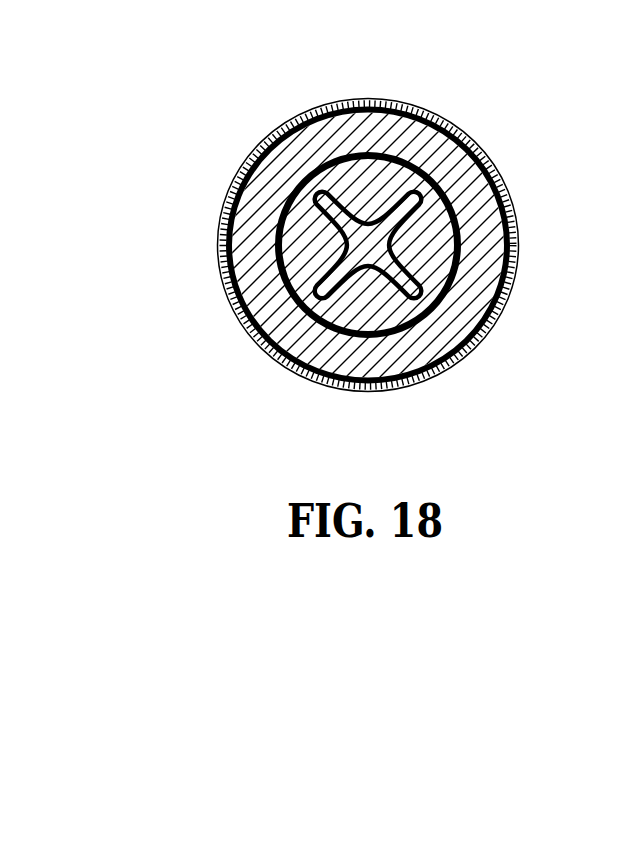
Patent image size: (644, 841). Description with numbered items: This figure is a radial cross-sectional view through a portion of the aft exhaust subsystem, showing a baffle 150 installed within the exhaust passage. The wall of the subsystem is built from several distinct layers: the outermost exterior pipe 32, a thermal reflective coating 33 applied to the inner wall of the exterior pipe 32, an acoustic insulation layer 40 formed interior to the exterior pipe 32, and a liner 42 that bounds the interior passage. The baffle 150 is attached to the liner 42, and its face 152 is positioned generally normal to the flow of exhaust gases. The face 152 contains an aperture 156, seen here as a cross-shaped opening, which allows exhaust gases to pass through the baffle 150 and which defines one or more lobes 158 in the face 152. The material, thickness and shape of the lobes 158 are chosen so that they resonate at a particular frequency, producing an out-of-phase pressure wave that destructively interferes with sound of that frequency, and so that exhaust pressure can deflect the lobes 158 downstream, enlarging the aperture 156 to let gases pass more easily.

The exterior pipe 32 is at (395, 392).
The thermal reflective coating 33 is at (430, 376).
The acoustic insulation layer 40 is at (440, 318).
The liner 42 is at (460, 268).
The baffle 150 is at (301, 327).
The face 152 is at (347, 173).
The aperture 156 is at (342, 265).
The lobes 158 is at (365, 218).